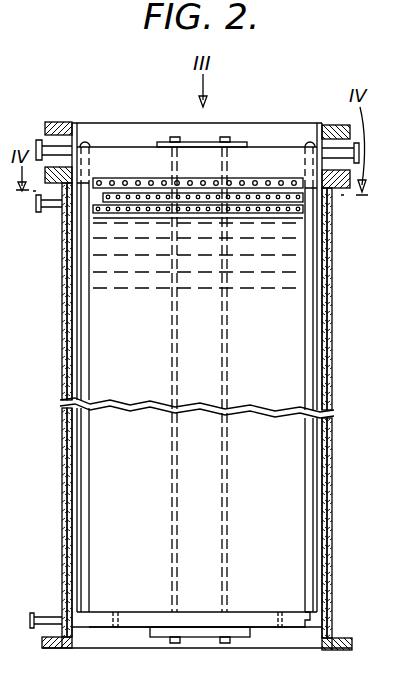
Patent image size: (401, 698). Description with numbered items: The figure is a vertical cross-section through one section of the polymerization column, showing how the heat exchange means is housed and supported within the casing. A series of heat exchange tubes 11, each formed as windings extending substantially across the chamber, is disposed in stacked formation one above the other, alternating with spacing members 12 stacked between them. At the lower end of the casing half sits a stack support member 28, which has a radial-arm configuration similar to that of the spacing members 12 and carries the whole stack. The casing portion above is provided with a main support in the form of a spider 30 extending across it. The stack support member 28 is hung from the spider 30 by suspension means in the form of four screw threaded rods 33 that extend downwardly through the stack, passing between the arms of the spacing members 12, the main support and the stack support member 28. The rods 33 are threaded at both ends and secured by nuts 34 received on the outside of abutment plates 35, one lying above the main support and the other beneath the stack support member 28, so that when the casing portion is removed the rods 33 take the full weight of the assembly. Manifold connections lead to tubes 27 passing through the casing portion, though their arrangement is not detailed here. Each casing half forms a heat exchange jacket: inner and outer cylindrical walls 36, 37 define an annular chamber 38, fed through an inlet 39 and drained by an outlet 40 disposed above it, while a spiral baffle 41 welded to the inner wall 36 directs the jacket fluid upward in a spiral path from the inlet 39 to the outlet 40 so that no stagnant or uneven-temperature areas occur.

The heat exchange tubes 11 is at (292, 180).
The spacing members 12 is at (305, 205).
The tubes 27 is at (337, 156).
The stack support member 28 is at (285, 614).
The spider 30 is at (127, 146).
The screw threaded rods 33 is at (221, 338).
The nuts 34 is at (224, 135).
The abutment plates 35 is at (266, 135).
The inner cylindrical wall 36 is at (66, 356).
The outer cylindrical wall 37 is at (72, 378).
The annular chamber 38 is at (70, 474).
The inlet 39 is at (42, 632).
The outlet 40 is at (56, 210).
The spiral baffle 41 is at (70, 298).